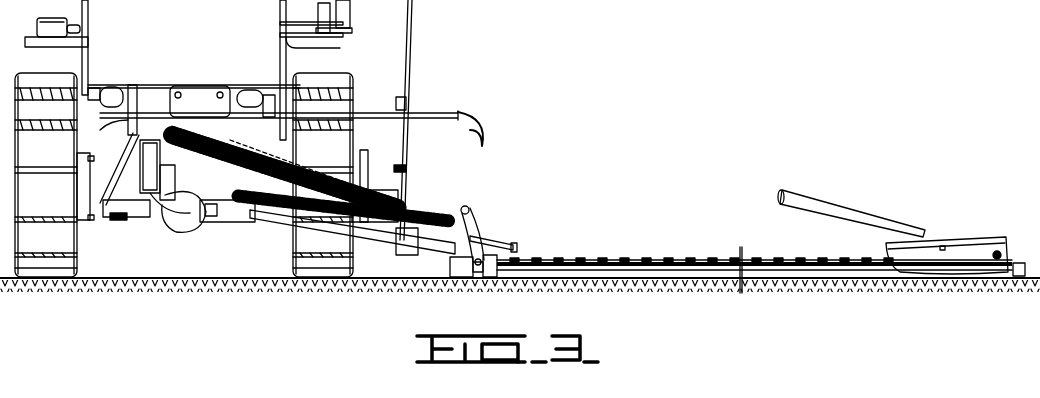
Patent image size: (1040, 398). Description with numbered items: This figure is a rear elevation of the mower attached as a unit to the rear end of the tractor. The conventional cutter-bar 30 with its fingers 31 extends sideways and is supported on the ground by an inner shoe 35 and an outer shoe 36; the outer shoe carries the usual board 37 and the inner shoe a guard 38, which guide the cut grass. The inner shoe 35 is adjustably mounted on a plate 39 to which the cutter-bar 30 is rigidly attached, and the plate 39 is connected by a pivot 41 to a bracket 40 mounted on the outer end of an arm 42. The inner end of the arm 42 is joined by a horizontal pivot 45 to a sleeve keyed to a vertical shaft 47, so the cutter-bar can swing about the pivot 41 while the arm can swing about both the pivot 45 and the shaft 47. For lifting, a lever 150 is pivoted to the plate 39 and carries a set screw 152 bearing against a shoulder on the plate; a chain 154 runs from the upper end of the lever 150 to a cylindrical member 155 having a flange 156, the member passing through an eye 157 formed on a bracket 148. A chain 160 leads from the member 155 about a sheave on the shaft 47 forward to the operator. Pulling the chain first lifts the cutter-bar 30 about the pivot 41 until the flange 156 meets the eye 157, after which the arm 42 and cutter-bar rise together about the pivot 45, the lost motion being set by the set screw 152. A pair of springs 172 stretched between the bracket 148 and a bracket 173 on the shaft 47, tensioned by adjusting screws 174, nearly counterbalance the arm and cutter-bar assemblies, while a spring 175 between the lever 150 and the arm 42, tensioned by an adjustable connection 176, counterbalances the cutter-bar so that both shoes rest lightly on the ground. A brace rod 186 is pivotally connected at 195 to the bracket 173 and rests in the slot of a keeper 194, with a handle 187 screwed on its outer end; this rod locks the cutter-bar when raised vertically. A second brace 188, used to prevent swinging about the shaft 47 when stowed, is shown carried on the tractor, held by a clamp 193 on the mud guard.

The cutter-bar 30 is at (652, 267).
The fingers 31 is at (596, 258).
The inner shoe 35 is at (473, 278).
The outer shoe 36 is at (1020, 274).
The board 37 is at (970, 242).
The guard 38 is at (505, 243).
The plate 39 is at (490, 278).
The bracket 40 is at (412, 247).
The pivot 41 is at (453, 255).
The arm 42 is at (290, 228).
The horizontal pivot 45 is at (172, 227).
The vertical shaft 47 is at (157, 156).
The bracket 148 is at (400, 168).
The lever 150 is at (467, 208).
The set screw 152 is at (480, 237).
The chain 154 is at (420, 204).
The cylindrical member 155 is at (388, 192).
The flange 156 is at (412, 197).
The eye 157 is at (388, 175).
The chain 160 is at (321, 153).
The springs 172 is at (255, 135).
The bracket 173 is at (165, 110).
The adjusting screws 174 is at (143, 137).
The spring 175 is at (260, 230).
The adjustable connection 176 is at (252, 214).
The brace rod 186 is at (434, 112).
The handle 187 is at (483, 127).
The brace 188 is at (323, 20).
The clamp 193 is at (318, 36).
The keeper 194 is at (412, 103).
The pivotal connection 195 is at (166, 110).